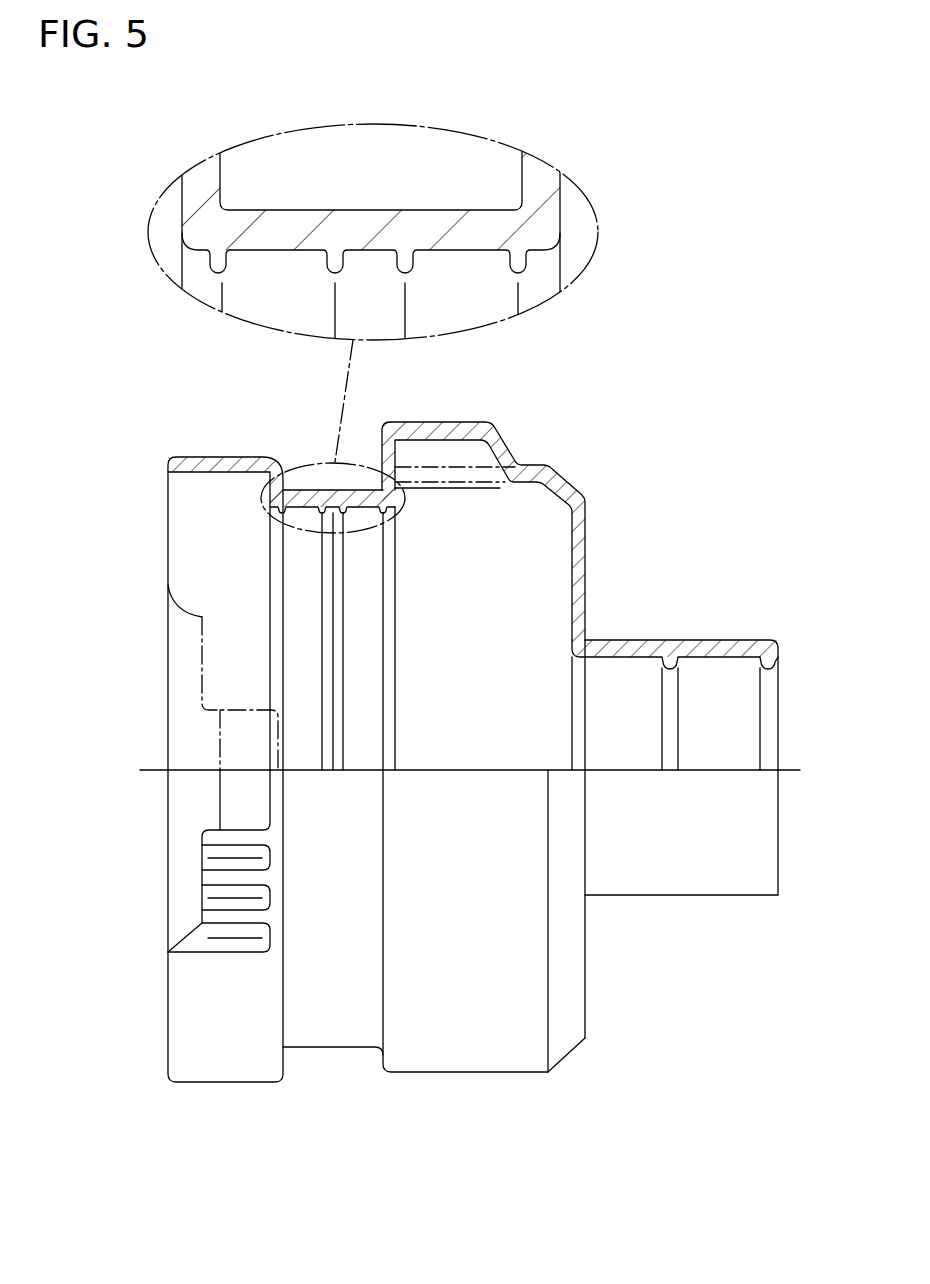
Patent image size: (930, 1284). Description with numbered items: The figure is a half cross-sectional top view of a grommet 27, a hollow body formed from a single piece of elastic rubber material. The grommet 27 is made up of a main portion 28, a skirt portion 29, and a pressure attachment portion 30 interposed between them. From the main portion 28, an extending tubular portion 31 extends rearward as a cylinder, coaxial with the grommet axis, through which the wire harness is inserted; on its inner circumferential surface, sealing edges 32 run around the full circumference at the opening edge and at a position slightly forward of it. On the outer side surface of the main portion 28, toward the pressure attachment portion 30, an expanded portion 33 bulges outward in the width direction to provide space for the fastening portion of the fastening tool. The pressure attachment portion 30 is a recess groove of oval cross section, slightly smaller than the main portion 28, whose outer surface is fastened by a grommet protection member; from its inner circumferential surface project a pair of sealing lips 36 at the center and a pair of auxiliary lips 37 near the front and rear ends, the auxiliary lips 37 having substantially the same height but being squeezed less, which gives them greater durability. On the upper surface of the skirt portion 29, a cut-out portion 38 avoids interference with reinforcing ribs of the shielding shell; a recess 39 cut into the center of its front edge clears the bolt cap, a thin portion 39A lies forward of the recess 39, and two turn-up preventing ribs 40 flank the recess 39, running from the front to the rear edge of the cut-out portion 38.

The grommet 27 is at (492, 1080).
The main portion 28 is at (538, 472).
The skirt portion 29 is at (218, 1070).
The pressure attachment portion 30 is at (458, 210).
The extending tubular portion 31 is at (627, 642).
The sealing edges 32 is at (670, 660).
The expanded portion 33 is at (468, 425).
The sealing lips 36 is at (405, 265).
The auxiliary lips 37 is at (220, 268).
The cut-out portion 38 is at (190, 733).
The recess 39 is at (190, 818).
The thin portion 39A is at (242, 797).
The turn-up preventing ribs 40 is at (212, 903).